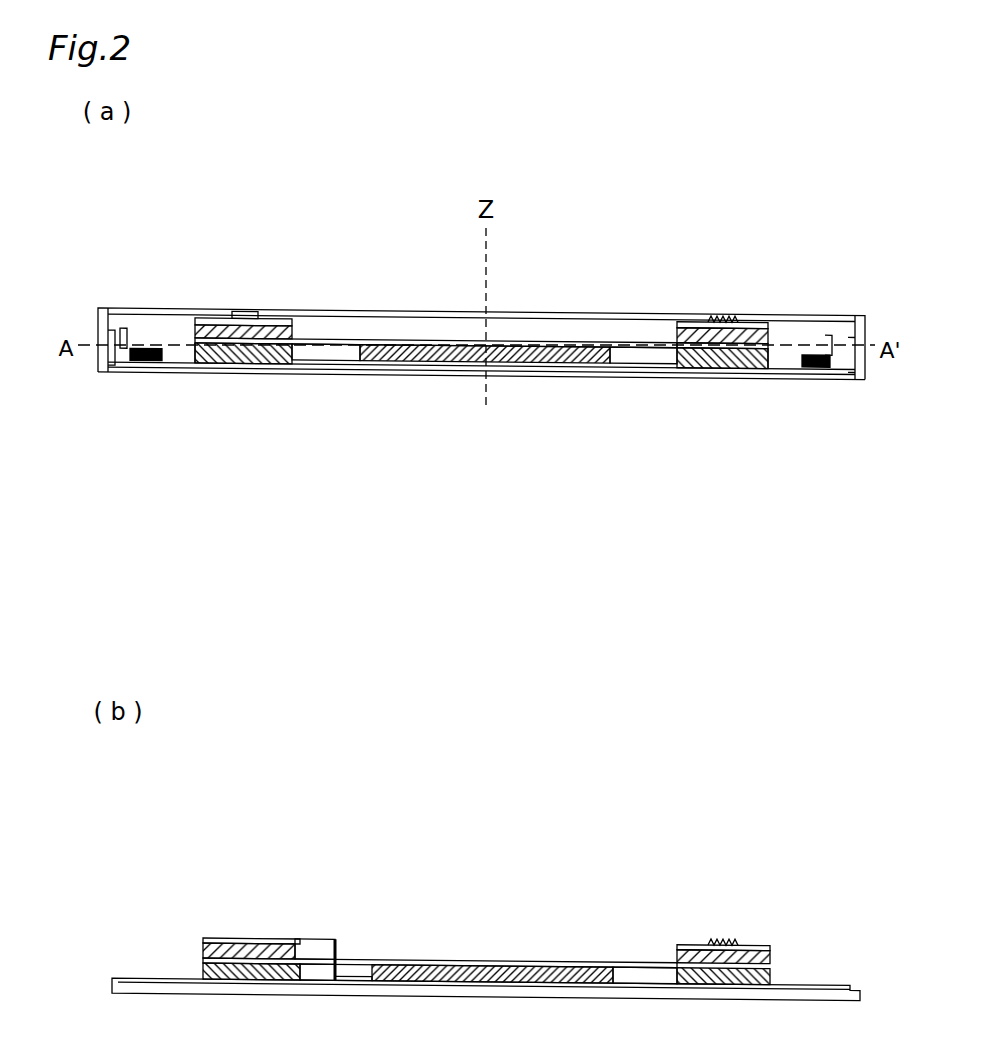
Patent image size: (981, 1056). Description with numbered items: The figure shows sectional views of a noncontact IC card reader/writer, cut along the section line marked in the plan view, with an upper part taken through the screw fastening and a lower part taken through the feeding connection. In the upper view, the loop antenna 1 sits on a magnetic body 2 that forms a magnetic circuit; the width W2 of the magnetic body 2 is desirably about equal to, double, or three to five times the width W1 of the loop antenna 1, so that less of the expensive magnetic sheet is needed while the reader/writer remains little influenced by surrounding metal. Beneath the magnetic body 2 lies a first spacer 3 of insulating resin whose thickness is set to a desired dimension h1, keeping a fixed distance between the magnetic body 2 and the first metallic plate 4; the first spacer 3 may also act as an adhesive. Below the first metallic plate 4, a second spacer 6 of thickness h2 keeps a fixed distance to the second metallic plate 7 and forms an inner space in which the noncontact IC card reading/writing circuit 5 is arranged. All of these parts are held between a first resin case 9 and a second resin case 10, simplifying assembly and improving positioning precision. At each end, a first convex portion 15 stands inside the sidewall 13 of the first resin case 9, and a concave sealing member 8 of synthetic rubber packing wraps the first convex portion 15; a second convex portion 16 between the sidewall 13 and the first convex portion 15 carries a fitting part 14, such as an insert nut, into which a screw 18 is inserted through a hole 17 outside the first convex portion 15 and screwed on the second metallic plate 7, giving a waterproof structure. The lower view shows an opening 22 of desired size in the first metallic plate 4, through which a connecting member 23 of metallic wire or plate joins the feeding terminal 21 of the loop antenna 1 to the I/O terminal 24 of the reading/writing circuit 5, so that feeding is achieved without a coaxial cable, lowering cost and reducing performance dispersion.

The loop antenna 1 is at (721, 333).
The magnetic body 2 is at (756, 340).
The first spacer 3 is at (684, 330).
The first metallic plate 4 is at (652, 352).
The noncontact IC card reading/writing circuit 5 is at (416, 345).
The second spacer 6 is at (701, 358).
The second metallic plate 7 is at (777, 352).
The sealing member 8 is at (150, 362).
The first resin case 9 is at (337, 310).
The second resin case 10 is at (258, 362).
The sidewall 13 is at (97, 310).
The fitting part 14 is at (112, 330).
The first convex portion 15 is at (146, 322).
The second convex portion 16 is at (124, 330).
The hole 17 is at (113, 374).
The screw 18 is at (135, 387).
The feeding terminal 21 is at (293, 942).
The opening (through hole) 22 is at (341, 952).
The connecting member 23 is at (333, 968).
The I/O terminal 24 is at (370, 975).
The thickness of the first spacer h1 is at (197, 325).
The thickness of the second spacer h2 is at (190, 357).
The width of the loop antenna W1 is at (228, 302).
The width of the magnetic body W2 is at (197, 270).